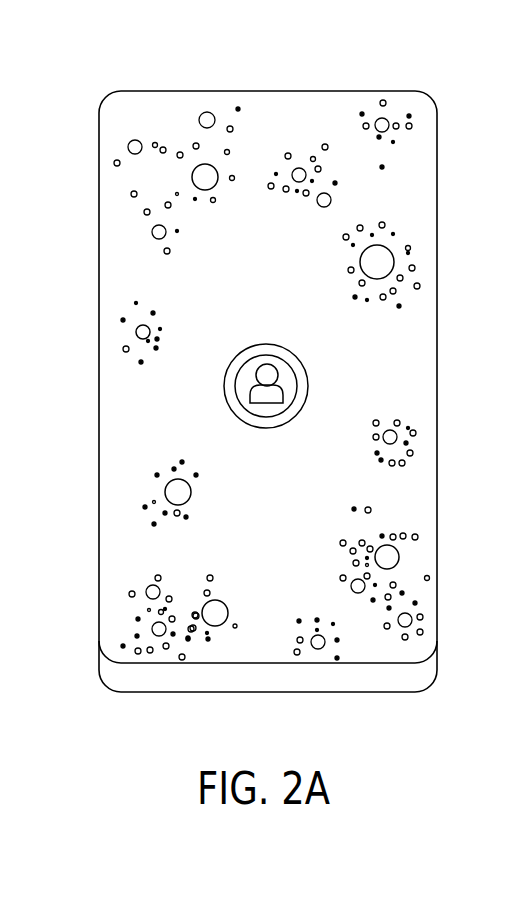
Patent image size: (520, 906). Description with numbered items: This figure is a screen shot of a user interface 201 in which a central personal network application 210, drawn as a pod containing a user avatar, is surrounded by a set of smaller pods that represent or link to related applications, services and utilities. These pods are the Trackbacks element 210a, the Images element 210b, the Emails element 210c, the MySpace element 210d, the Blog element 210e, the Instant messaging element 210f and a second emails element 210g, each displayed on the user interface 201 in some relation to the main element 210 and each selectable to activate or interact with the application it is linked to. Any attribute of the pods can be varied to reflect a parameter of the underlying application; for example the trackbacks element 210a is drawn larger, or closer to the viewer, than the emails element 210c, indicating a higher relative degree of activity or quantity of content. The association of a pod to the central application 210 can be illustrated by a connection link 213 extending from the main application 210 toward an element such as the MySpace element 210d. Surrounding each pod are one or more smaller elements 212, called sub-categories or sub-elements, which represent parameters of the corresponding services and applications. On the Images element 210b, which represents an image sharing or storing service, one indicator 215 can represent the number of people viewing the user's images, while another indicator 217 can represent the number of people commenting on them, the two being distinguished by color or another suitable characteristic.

The user interface 201 is at (99, 172).
The personal network application 210 is at (288, 392).
The Trackbacks element 210a is at (394, 263).
The Images element 210b is at (206, 163).
The Emails element 210c is at (136, 332).
The MySpace element 210d is at (166, 492).
The Blog element 210e is at (217, 627).
The Instant messaging element 210f is at (400, 557).
The emails element 210g is at (350, 527).
The smaller elements 212 is at (417, 280).
The connection link 213 is at (117, 397).
The indicator 215 is at (155, 142).
The indicator 217 is at (135, 140).